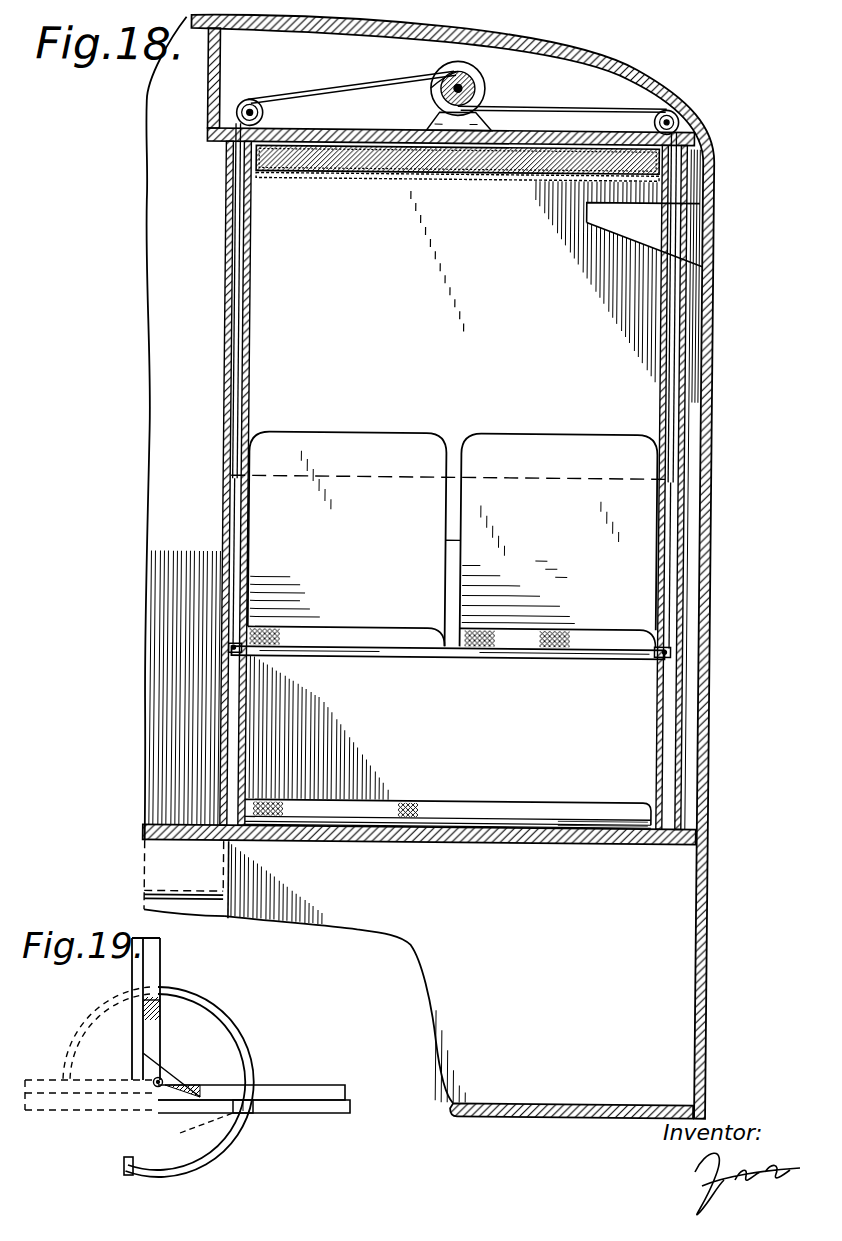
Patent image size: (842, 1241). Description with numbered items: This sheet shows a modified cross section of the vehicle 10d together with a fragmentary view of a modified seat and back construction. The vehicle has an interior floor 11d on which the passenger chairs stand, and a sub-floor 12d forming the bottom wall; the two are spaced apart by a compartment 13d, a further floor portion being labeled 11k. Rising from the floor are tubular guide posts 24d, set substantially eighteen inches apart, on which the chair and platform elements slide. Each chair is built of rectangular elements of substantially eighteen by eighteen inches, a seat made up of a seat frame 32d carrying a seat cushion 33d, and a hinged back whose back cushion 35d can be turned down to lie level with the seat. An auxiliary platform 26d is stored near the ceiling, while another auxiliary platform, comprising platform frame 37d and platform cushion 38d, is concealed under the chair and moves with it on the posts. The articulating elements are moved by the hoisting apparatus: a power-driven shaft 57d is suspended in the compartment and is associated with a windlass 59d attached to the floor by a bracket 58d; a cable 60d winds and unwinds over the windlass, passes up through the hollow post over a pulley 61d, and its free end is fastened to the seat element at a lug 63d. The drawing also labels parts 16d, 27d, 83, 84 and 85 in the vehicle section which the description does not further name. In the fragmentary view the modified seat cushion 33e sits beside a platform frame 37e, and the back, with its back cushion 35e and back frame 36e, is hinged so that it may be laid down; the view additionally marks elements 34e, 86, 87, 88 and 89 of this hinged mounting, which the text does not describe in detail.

In FIG. 18, the vehicle 10d is at (771, 232).
In FIG. 18, the floor 11k is at (531, 34).
In FIG. 18, the floor 11d is at (513, 845).
In FIG. 18, the sub-floor 12d is at (572, 1080).
In FIG. 18, the compartment 13d is at (389, 972).
In FIG. 18, the sill frame 16d is at (163, 866).
In FIG. 18, the guide post 24d is at (250, 317).
In FIG. 18, the platform 26d is at (396, 179).
In FIG. 18, the bracket 27d is at (596, 216).
In FIG. 18, the seat frame 32d is at (350, 608).
In FIG. 18, the seat cushion 33d is at (549, 652).
In FIG. 18, the back cushion 35d is at (354, 447).
In FIG. 18, the platform frame 37d is at (474, 811).
In FIG. 18, the platform cushion 38d is at (569, 824).
In FIG. 18, the shaft 57d is at (427, 88).
In FIG. 18, the bracket 58d is at (488, 120).
In FIG. 18, the windlass 59d is at (470, 93).
In FIG. 18, the cable 60d is at (342, 96).
In FIG. 18, the pulley 61d is at (259, 114).
In FIG. 18, the lug 63d is at (263, 657).
In FIG. 18, the housing 83 is at (593, 86).
In FIG. 18, the roll 84 is at (331, 151).
In FIG. 18, the support post 85 is at (203, 103).
In FIG. 19, the seat cushion 33e is at (322, 1108).
In FIG. 19, the pivot 34e is at (160, 1079).
In FIG. 19, the back cushion 35e is at (153, 953).
In FIG. 19, the back frame 36e is at (137, 970).
In FIG. 19, the platform frame 37e is at (300, 1094).
In FIG. 19, the arcuate guide 86 is at (227, 1023).
In FIG. 19, the stop 87 is at (137, 1000).
In FIG. 19, the hinge 88 is at (245, 1104).
In FIG. 19, the end stop 89 is at (132, 1162).